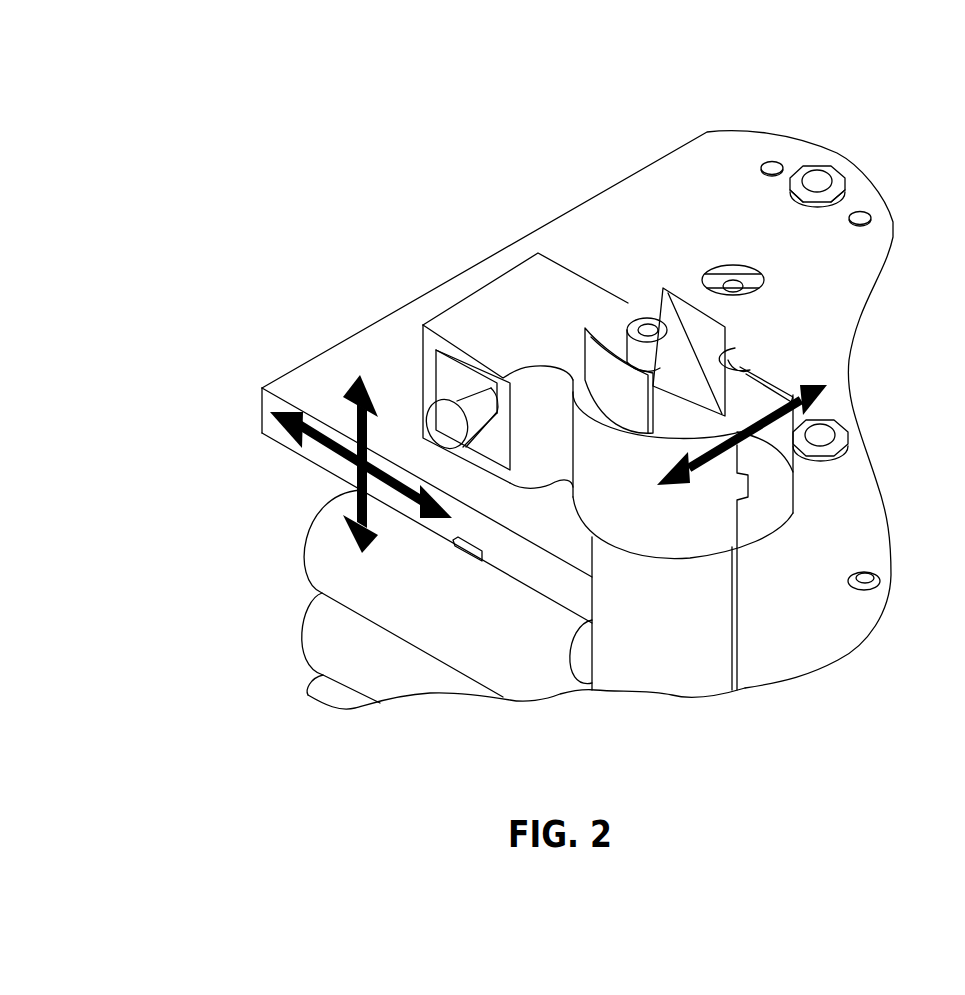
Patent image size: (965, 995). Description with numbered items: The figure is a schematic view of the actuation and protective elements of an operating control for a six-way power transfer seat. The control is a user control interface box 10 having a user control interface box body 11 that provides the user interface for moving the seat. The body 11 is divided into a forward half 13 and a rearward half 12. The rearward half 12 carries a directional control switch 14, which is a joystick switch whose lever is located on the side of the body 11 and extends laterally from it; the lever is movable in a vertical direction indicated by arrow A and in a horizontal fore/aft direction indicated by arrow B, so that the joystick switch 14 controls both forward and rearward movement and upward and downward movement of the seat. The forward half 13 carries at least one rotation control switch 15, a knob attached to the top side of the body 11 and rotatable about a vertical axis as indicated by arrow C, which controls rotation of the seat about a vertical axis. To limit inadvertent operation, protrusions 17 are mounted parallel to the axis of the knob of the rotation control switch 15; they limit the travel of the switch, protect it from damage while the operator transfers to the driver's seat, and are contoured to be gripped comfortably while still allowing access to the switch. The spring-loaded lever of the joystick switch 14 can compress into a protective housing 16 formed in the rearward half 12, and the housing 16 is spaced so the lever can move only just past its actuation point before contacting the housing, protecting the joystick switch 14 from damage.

The user control interface box 10 is at (450, 240).
The user control interface box body 11 is at (565, 455).
The rearward half 12 is at (468, 317).
The forward half 13 is at (682, 515).
The directional control switch 14 is at (440, 413).
The rotation control switch 15 is at (727, 333).
The protective housing 16 is at (498, 455).
The protrusions 17 is at (633, 353).
The arrow A is at (260, 392).
The arrow B is at (330, 453).
The arrow C is at (793, 468).